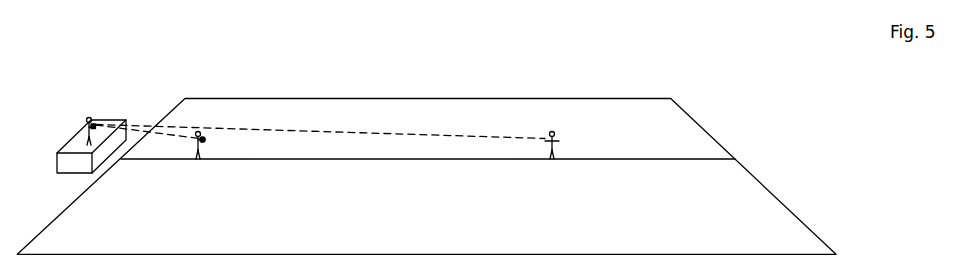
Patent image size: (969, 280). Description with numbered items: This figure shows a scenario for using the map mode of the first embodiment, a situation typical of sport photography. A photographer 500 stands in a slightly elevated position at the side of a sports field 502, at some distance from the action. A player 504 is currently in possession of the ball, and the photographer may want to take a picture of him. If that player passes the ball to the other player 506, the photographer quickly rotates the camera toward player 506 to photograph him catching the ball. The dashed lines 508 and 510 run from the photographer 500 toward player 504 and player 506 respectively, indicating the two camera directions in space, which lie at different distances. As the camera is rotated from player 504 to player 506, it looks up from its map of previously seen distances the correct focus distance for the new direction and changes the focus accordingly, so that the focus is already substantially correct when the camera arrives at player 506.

The photographer 500 is at (78, 129).
The sports field 502 is at (426, 171).
The player 504 is at (217, 146).
The player 506 is at (568, 146).
The line of sight to first person 508 is at (147, 140).
The line of sight to second person 510 is at (320, 130).